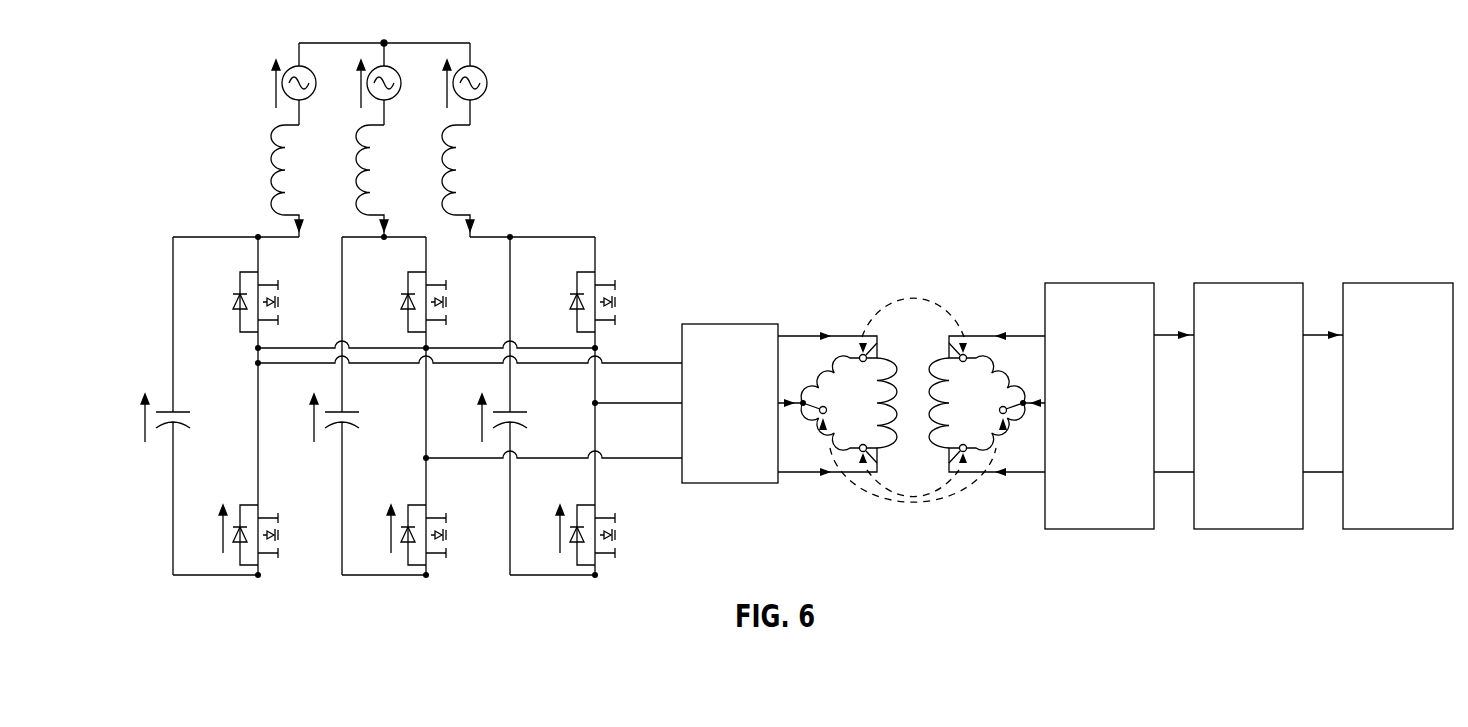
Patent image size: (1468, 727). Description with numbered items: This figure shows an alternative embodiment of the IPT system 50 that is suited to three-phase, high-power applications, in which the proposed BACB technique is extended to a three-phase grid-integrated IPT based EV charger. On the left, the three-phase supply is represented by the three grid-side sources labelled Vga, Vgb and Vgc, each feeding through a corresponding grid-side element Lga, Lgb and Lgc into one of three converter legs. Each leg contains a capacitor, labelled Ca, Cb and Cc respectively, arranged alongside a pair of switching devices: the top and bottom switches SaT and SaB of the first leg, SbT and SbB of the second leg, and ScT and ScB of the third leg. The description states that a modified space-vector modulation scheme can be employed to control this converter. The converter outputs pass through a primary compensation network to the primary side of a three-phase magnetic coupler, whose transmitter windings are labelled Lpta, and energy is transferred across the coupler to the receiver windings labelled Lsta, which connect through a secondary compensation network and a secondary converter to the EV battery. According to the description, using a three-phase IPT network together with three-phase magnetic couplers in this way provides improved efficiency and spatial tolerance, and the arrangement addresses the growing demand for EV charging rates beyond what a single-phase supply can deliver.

The IPT system 50 is at (720, 186).
The grid voltage source phase a Vga is at (277, 84).
The grid voltage source phase b Vgb is at (362, 84).
The grid voltage source phase c Vgc is at (448, 84).
The grid inductor phase a Lga is at (264, 181).
The grid inductor phase b Lgb is at (349, 181).
The grid inductor phase c Lgc is at (435, 181).
The DC-link capacitor phase a Ca is at (188, 406).
The DC-link capacitor phase b Cb is at (358, 406).
The DC-link capacitor phase c Cc is at (525, 406).
The top switch phase a SaT is at (278, 302).
The bottom switch phase a SaB is at (278, 535).
The top switch phase b SbT is at (446, 302).
The bottom switch phase b SbB is at (446, 535).
The top switch phase c ScT is at (615, 302).
The bottom switch phase c ScB is at (615, 535).
The primary transmitter coils Lpta is at (837, 388).
The secondary receiver coils Lsta is at (987, 388).